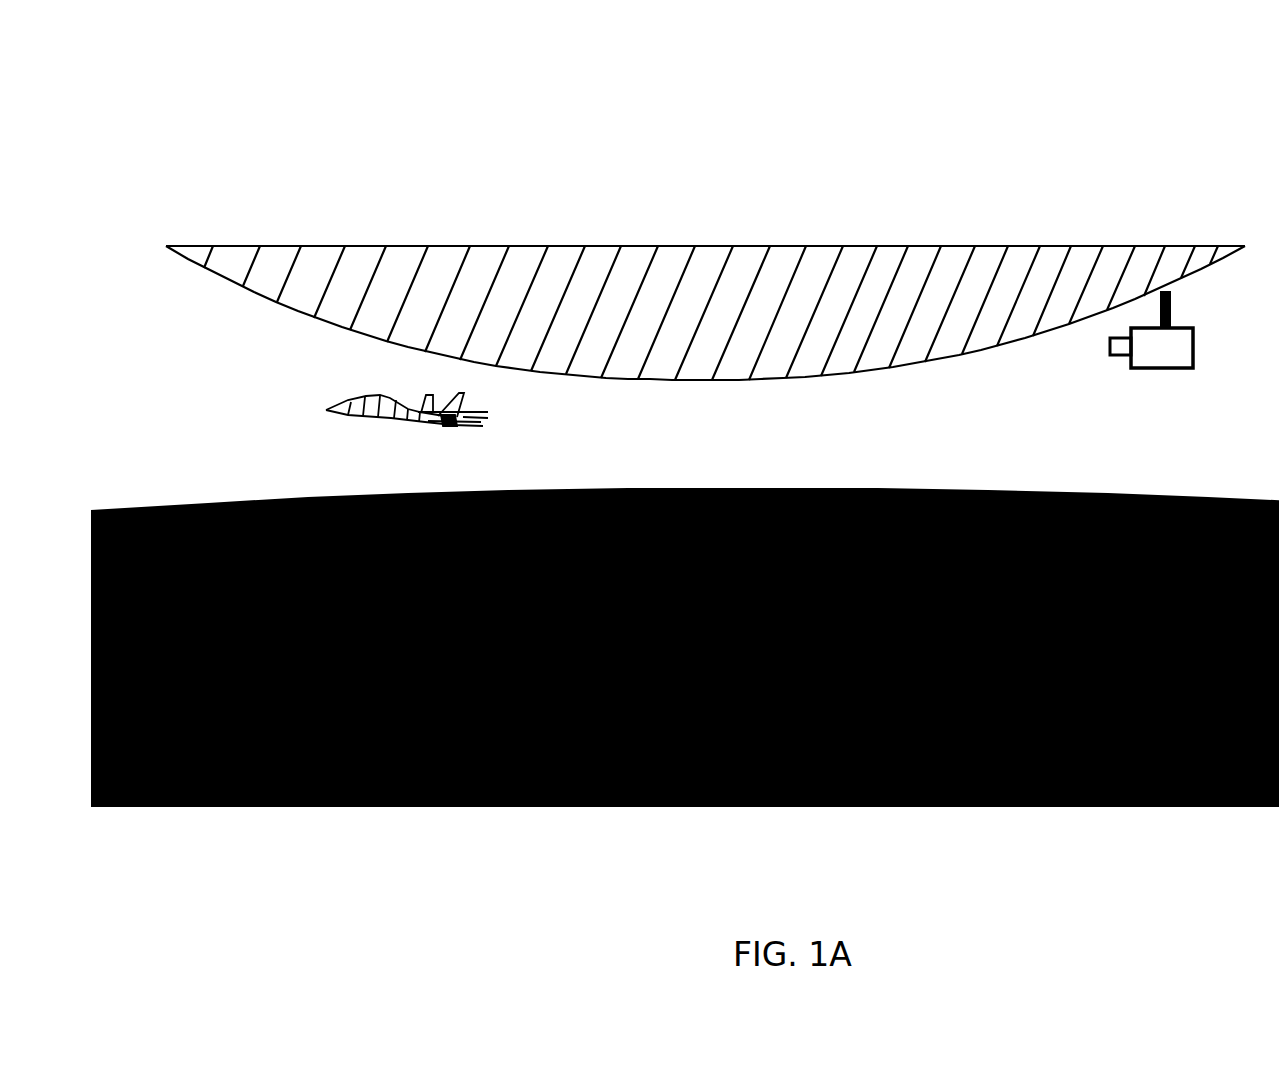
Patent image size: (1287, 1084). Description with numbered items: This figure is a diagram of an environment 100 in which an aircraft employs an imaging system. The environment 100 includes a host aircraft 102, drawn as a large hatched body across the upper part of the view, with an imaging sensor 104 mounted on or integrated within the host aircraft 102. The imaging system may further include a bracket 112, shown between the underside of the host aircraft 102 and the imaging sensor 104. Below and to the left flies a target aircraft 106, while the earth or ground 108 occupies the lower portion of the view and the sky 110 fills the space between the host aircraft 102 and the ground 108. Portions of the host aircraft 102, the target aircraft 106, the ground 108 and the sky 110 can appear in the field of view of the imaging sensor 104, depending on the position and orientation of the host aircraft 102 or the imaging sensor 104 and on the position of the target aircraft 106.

The environment 100 is at (197, 84).
The host aircraft 102 is at (215, 273).
The imaging sensor 104 is at (1183, 358).
The target aircraft 106 is at (322, 403).
The ground 108 is at (165, 499).
The sky 110 is at (1007, 405).
The bracket 112 is at (1166, 302).